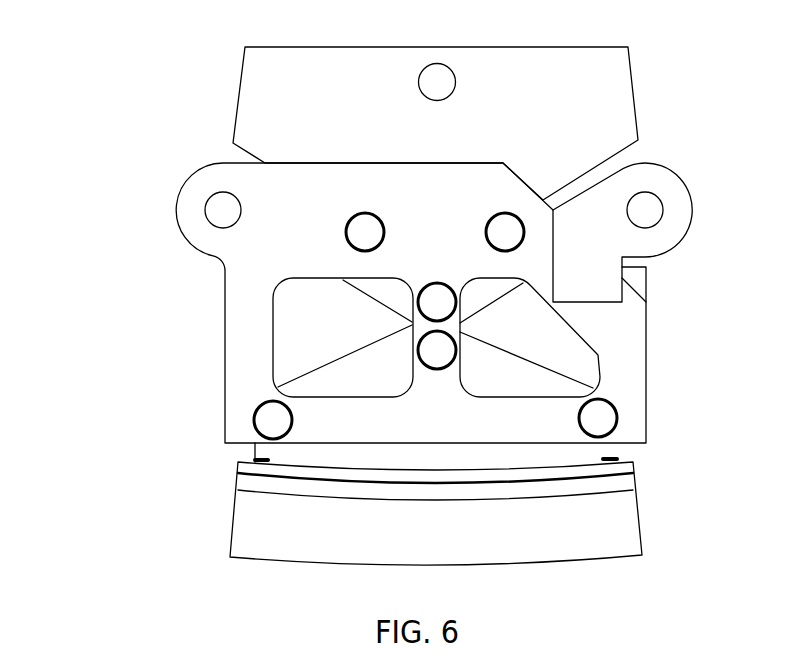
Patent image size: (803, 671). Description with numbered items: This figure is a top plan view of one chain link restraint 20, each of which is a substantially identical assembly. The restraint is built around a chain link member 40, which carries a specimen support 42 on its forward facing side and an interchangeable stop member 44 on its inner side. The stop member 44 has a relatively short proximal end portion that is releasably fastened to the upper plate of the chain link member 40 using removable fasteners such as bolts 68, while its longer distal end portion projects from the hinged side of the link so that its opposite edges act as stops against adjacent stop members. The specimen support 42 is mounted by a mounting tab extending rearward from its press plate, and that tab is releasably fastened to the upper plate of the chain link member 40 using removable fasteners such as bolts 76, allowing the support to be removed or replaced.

The chain link restraint 20 is at (130, 388).
The chain link member 40 is at (647, 353).
The specimen support 42 is at (310, 567).
The stop member 44 is at (633, 72).
The bolts 68 is at (437, 302).
The bolts 76 is at (438, 354).